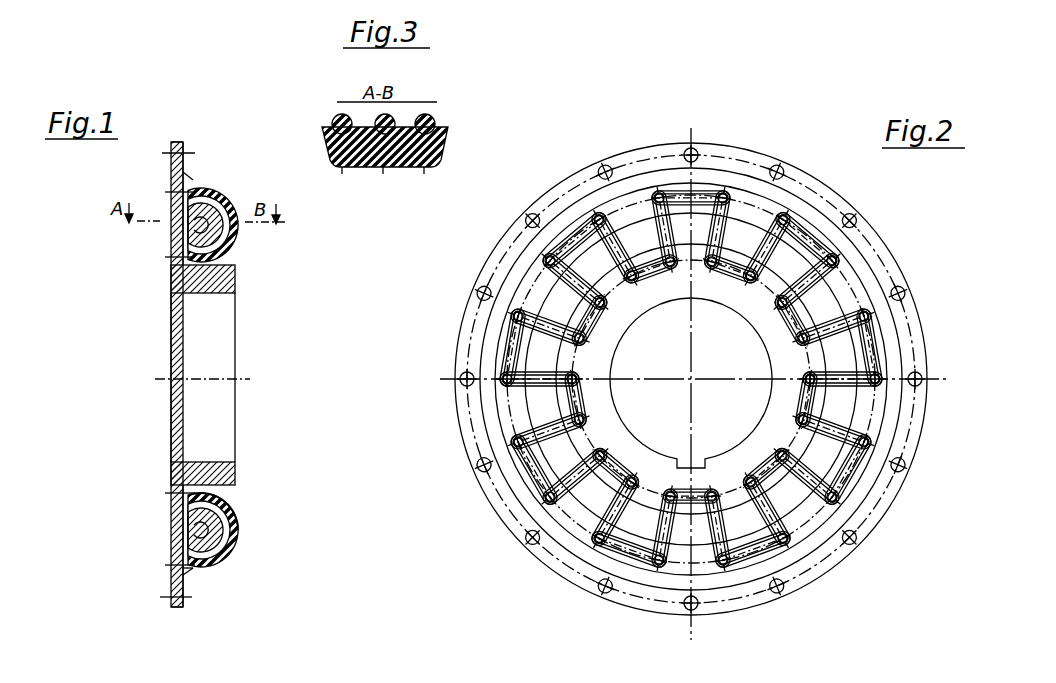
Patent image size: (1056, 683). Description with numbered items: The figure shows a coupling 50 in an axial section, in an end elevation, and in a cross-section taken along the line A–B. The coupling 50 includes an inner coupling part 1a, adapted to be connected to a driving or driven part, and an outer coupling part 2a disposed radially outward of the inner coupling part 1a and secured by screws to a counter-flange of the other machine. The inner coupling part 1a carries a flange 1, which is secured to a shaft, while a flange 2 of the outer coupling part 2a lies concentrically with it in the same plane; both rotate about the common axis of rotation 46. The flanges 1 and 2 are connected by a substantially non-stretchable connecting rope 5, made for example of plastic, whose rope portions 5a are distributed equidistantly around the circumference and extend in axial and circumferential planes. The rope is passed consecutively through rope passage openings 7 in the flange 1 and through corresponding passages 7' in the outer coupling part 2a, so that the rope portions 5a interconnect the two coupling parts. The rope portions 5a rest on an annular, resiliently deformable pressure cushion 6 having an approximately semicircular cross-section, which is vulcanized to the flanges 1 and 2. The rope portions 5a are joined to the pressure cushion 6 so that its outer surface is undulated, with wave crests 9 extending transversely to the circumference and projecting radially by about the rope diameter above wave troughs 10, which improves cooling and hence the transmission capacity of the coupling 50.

In FIG. 1, the flange 1 is at (170, 491).
In FIG. 1, the inner coupling part 1a is at (170, 476).
In FIG. 2, the inner coupling part 1a is at (602, 407).
In FIG. 1, the flange 2 is at (168, 547).
In FIG. 1, the outer coupling part 2a is at (168, 598).
In FIG. 2, the outer coupling part 2a is at (492, 509).
In FIG. 1, the connecting rope 5 is at (241, 239).
In FIG. 3, the connecting rope 5 is at (333, 126).
In FIG. 2, the connecting rope 5 is at (828, 246).
In FIG. 2, the rope portions 5a is at (545, 225).
In FIG. 1, the pressure cushion 6 is at (231, 556).
In FIG. 3, the pressure cushion 6 is at (358, 168).
In FIG. 1, the rope passage openings 7 is at (219, 375).
In FIG. 2, the rope passage openings 7 is at (751, 380).
In FIG. 1, the passages 7' is at (206, 591).
In FIG. 1, the wave crests 9 is at (238, 528).
In FIG. 3, the wave crests 9 is at (446, 126).
In FIG. 1, the wave troughs 10 is at (240, 548).
In FIG. 3, the wave troughs 10 is at (407, 168).
In FIG. 1, the axis of rotation 46 is at (253, 379).
In FIG. 2, the axis of rotation 46 is at (699, 377).
In FIG. 1, the coupling 50 is at (160, 291).